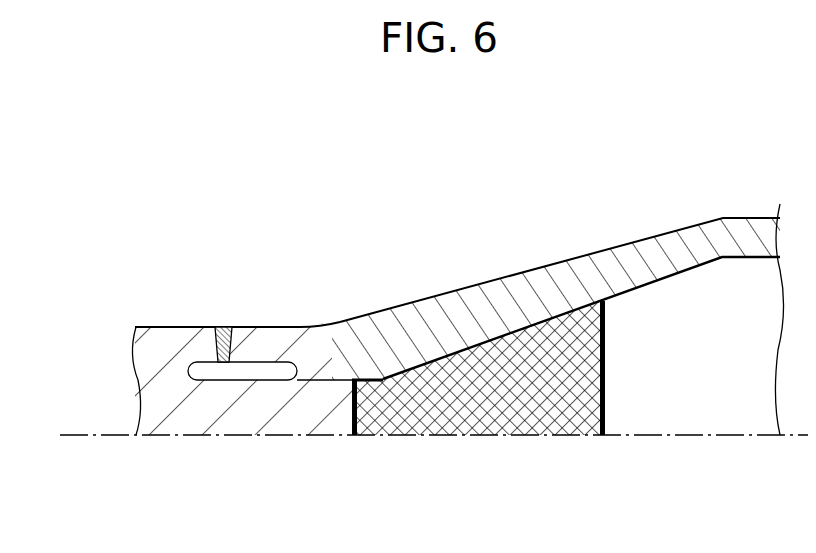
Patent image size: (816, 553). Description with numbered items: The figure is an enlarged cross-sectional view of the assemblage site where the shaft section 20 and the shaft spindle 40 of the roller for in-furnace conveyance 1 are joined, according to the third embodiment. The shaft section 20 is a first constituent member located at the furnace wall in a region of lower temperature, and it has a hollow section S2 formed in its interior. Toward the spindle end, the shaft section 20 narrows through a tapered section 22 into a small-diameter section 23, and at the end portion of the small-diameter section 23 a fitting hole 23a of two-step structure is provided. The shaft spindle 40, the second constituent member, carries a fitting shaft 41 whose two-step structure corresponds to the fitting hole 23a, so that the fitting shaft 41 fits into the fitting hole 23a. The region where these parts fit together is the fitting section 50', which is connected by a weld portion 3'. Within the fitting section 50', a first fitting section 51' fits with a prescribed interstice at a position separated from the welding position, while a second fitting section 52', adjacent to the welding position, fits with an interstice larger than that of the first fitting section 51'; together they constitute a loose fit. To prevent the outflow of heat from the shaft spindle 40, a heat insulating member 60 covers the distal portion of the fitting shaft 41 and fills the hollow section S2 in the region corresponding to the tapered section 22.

The roller for in-furnace conveyance 1 is at (72, 242).
The shaft section 20 is at (648, 260).
The tapered section 22 is at (503, 278).
The small-diameter section 23 is at (272, 327).
The fitting hole 23a is at (258, 362).
The weld portion 3' is at (207, 291).
The shaft spindle 40 is at (168, 353).
The fitting shaft 41 is at (248, 405).
The fitting section 50' is at (334, 313).
The first fitting section 51' is at (347, 308).
The second fitting section 52' is at (296, 308).
The heat insulating member 60 is at (483, 398).
The hollow section S2 is at (710, 371).